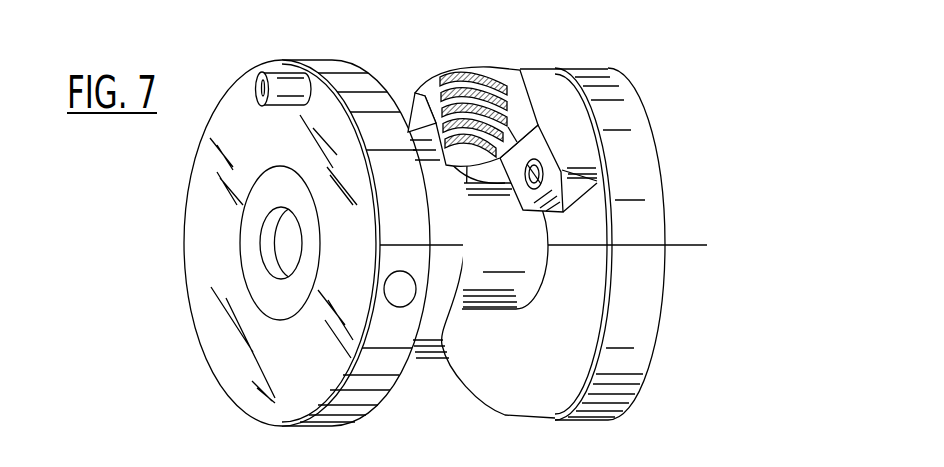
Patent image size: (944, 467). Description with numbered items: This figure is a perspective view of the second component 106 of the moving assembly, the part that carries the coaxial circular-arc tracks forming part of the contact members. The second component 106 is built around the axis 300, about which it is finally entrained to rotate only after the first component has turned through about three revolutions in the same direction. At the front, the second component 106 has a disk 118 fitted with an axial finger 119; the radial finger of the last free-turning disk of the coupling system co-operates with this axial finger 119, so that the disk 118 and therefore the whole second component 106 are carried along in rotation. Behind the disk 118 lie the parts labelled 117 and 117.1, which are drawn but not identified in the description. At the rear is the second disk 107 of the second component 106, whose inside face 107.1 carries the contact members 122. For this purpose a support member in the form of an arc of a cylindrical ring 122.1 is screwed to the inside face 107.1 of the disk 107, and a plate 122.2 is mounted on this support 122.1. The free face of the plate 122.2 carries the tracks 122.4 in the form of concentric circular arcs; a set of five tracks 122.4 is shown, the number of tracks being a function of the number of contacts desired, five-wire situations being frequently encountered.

The second component 106 is at (236, 411).
The second disk 107 is at (608, 267).
The inside face 107.1 is at (556, 376).
The hub 117 is at (512, 282).
The drum 117.1 is at (441, 318).
The disk 118 is at (285, 251).
The axial finger 119 is at (283, 86).
The contact members 122 is at (574, 117).
The support member 122.1 is at (578, 136).
The plate 122.2 is at (530, 114).
The coaxial tracks 122.4 is at (500, 112).
The axis 300 is at (688, 245).